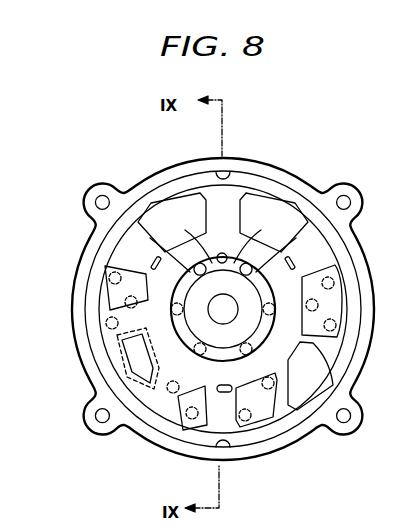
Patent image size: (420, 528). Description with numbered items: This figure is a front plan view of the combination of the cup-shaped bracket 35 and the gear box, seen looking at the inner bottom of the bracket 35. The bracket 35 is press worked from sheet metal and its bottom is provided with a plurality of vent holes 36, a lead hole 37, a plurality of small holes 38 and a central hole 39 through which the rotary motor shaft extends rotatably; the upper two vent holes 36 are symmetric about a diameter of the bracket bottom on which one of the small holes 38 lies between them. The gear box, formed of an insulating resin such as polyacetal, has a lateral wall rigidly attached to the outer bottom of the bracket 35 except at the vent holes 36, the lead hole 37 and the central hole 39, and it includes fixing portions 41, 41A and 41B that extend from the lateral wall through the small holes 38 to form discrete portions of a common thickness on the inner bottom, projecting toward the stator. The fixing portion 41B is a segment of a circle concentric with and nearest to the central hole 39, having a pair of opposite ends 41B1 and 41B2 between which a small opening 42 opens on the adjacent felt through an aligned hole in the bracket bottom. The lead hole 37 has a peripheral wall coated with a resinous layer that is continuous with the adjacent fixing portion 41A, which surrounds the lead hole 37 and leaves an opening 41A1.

The cup-shaped bracket 35 is at (272, 180).
The vent holes 36 is at (183, 170).
The lead hole 37 is at (121, 348).
The small holes 38 is at (264, 300).
The central hole 39 is at (221, 323).
The fixing portion 41 is at (335, 304).
The fixing portion 41A is at (178, 403).
The opening 41A1 is at (106, 355).
The fixing portion 41B is at (162, 252).
The end of segment 41B1 is at (172, 222).
The end of segment 41B2 is at (274, 222).
The small opening 42 is at (247, 195).